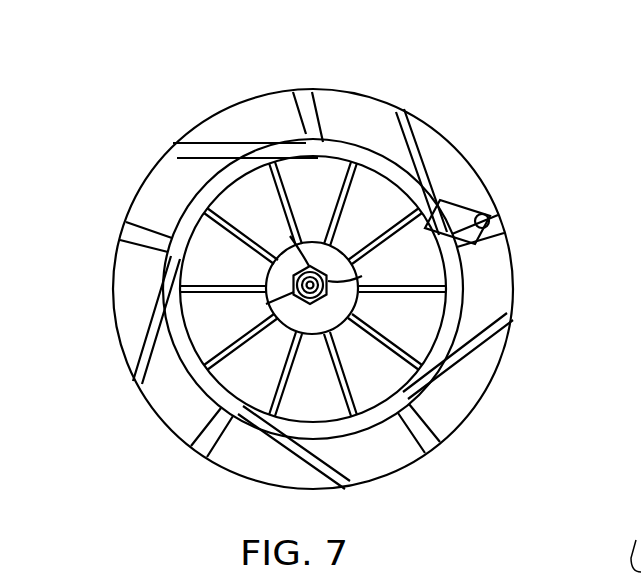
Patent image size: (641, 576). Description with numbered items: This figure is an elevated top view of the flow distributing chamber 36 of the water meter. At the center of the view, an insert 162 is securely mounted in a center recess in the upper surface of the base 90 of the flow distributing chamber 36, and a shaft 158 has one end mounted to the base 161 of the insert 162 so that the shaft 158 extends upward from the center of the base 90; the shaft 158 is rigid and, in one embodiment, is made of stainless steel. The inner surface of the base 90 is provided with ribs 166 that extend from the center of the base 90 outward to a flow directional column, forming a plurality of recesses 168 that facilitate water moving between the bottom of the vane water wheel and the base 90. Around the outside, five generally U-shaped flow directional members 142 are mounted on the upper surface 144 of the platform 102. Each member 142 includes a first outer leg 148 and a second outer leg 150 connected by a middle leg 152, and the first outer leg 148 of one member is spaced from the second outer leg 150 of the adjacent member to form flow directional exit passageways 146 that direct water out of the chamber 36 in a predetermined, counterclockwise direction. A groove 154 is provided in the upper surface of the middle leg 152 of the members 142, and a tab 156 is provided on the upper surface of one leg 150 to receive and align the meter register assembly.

The flow distributing chamber 36 is at (543, 300).
The base 90 is at (389, 187).
The platform 102 is at (490, 200).
The flow directional members 142 is at (290, 103).
The upper surface 144 is at (324, 110).
The flow directional exit passageways 146 is at (358, 112).
The first outer leg 148 is at (163, 164).
The second outer leg 150 is at (314, 90).
The middle leg 152 is at (288, 100).
The groove 154 is at (303, 132).
The tab 156 is at (505, 224).
The shaft 158 is at (265, 298).
The base of insert 161 is at (355, 266).
The insert 162 is at (312, 240).
The ribs 166 is at (330, 212).
The recesses 168 is at (237, 276).